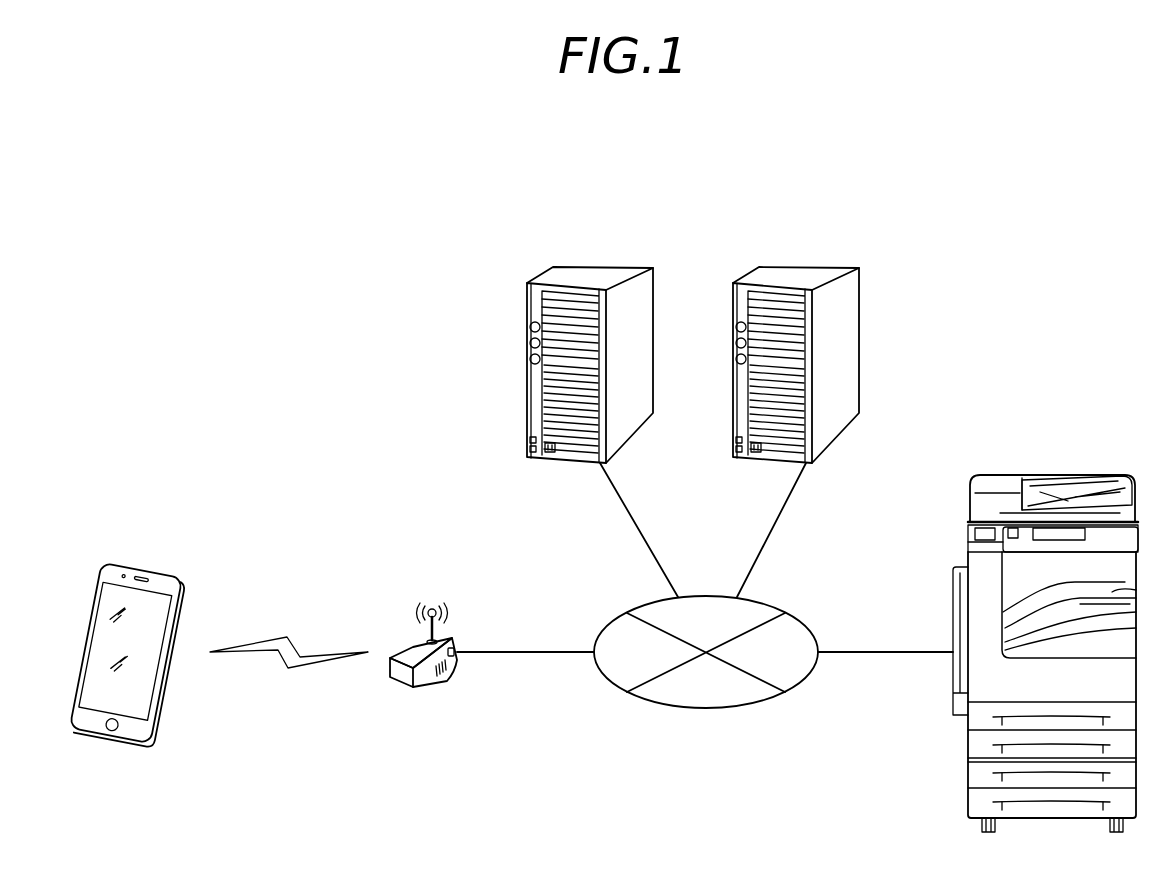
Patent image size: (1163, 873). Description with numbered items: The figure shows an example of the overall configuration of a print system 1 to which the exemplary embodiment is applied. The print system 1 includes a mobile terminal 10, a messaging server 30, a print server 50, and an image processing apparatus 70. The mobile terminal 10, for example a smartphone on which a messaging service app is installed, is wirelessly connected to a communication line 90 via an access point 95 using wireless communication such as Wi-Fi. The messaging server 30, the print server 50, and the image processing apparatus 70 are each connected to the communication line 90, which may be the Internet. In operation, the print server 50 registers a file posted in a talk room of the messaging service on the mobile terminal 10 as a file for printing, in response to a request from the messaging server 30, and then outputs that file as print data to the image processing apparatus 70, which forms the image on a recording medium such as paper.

The print system 1 is at (1053, 222).
The mobile terminal 10 is at (152, 568).
The messaging server 30 is at (607, 265).
The print server 50 is at (812, 265).
The image processing apparatus 70 is at (1078, 472).
The communication line 90 is at (797, 618).
The access point 95 is at (407, 646).